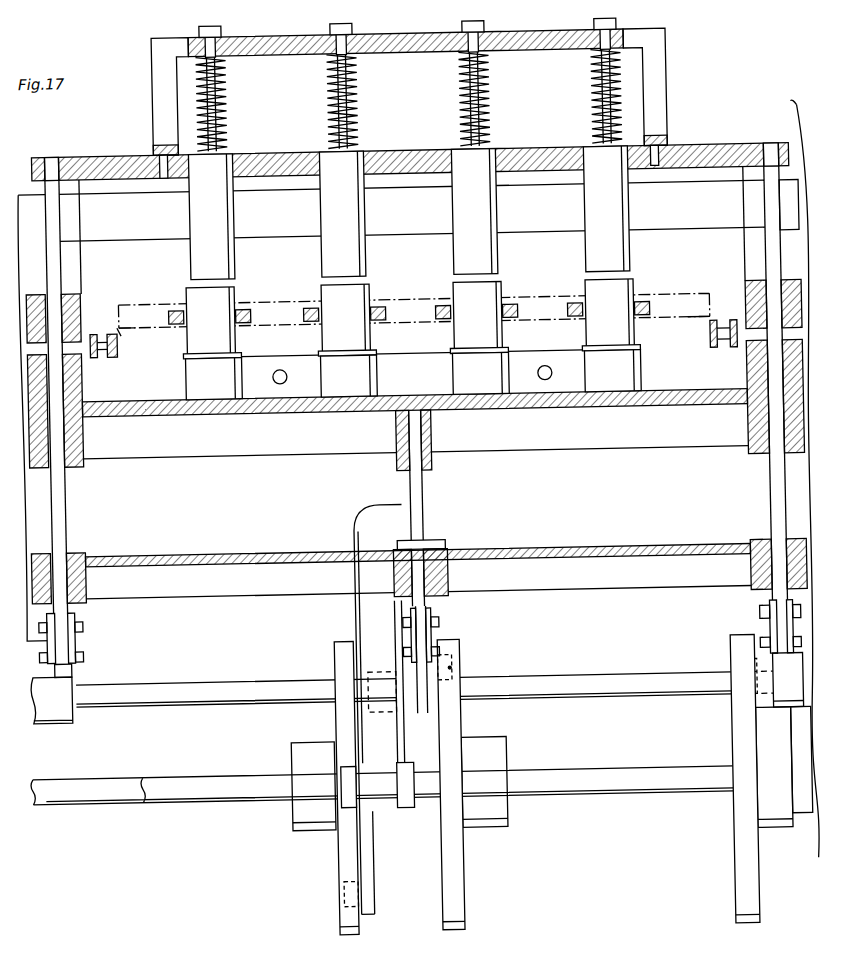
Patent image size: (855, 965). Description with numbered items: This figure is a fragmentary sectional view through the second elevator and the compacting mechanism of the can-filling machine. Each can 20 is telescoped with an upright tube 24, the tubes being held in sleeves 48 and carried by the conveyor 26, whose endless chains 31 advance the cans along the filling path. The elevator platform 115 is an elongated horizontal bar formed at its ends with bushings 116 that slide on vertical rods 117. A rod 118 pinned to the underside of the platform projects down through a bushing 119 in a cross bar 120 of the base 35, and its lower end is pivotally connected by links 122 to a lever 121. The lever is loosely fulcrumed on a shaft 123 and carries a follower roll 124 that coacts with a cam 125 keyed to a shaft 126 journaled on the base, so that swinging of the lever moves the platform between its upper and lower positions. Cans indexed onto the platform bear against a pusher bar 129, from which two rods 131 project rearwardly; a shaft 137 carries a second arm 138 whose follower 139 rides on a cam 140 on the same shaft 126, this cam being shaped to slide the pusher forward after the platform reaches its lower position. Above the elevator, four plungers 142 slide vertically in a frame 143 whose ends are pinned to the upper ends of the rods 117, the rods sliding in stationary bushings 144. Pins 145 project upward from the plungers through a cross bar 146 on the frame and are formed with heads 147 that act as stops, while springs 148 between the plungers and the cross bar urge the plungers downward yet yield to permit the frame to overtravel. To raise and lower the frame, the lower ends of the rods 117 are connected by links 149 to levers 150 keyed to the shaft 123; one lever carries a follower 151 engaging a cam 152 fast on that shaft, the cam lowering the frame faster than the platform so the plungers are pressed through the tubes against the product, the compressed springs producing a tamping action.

The cross bar 146 is at (294, 36).
The heads 147 is at (229, 23).
The springs 148 is at (234, 91).
The pins 145 is at (232, 104).
The frame 143 is at (718, 150).
The plungers 142 is at (195, 259).
The stationary bushings 144 is at (80, 302).
The tubes 24 is at (325, 290).
The sleeves 48 is at (252, 320).
The conveyor 26 is at (698, 297).
The endless chains 31 is at (110, 348).
The pusher bar 129 is at (429, 356).
The rods 131 is at (276, 373).
The cans 20 is at (188, 378).
The elevator platform 115 is at (690, 396).
The bushings 116 is at (75, 438).
The vertical rods 117 is at (66, 488).
The rod 118 is at (423, 491).
The bushing 119 is at (436, 549).
The cross bar 120 is at (488, 550).
The links 122 is at (430, 625).
The follower roll 124 is at (450, 662).
The cam 125 is at (449, 669).
The shaft 123 is at (546, 678).
The lever 121 is at (430, 714).
The shaft 126 is at (90, 771).
The shaft 137 is at (422, 798).
The second arm 138 is at (367, 873).
The follower 139 is at (336, 888).
The cam 140 is at (331, 906).
The links 149 is at (58, 648).
The levers 150 is at (69, 669).
The follower 151 is at (736, 671).
The cam 152 is at (727, 731).
The base 35 is at (808, 842).